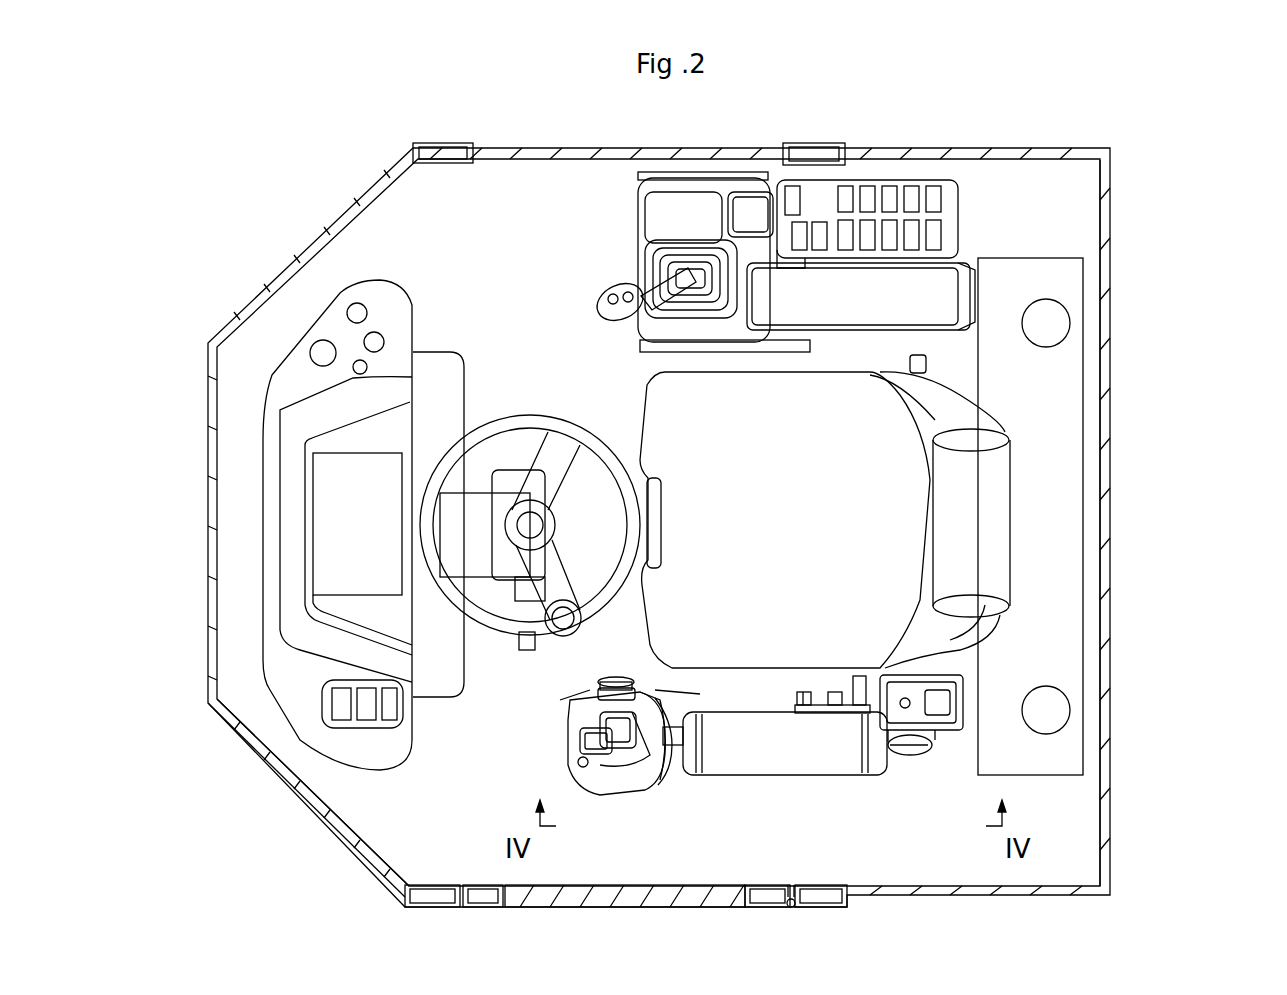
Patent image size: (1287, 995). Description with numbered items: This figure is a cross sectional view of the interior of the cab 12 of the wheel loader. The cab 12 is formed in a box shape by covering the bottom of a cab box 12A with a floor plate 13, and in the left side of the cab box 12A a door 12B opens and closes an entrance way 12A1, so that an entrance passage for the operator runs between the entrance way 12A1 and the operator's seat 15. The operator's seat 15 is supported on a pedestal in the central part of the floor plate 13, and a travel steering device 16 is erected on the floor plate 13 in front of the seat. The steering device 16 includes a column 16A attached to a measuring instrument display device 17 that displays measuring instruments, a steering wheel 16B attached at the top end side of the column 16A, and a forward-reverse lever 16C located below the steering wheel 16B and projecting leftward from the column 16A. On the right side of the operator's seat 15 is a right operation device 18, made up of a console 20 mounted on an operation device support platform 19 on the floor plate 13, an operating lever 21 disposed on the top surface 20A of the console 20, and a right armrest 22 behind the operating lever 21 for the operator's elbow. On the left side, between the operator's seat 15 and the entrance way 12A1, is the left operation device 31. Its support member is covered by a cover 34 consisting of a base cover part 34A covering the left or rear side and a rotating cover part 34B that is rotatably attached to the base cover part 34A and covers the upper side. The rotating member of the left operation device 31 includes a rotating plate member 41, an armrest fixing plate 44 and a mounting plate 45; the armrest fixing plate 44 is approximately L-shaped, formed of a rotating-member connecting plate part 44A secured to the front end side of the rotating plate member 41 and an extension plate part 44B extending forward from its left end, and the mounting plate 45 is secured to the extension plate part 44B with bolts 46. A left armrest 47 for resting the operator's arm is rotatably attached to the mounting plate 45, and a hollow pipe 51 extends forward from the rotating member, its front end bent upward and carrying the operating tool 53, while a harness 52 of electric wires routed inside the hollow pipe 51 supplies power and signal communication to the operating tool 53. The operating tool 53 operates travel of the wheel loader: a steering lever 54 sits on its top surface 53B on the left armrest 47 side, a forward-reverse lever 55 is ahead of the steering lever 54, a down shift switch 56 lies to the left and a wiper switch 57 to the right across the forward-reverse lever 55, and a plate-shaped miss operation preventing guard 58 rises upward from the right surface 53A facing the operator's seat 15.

The cab 12 is at (1130, 325).
The cab box 12A is at (1106, 556).
The door 12B is at (622, 900).
The entrance way 12A1 is at (788, 900).
The floor plate 13 is at (420, 805).
The operator's seat 15 is at (840, 477).
The travel steering device 16 is at (508, 498).
The column 16A is at (478, 520).
The steering wheel 16B is at (562, 440).
The forward-reverse lever 16C is at (532, 645).
The measuring instrument display device 17 is at (345, 525).
The right operation device 18 is at (962, 217).
The operation device support platform 19 is at (641, 176).
The console 20 is at (750, 245).
The top surface 20A is at (690, 190).
The operating lever 21 is at (618, 298).
The right armrest 22 is at (886, 300).
The left operation device 31 is at (608, 796).
The cover 34 is at (965, 730).
The base cover part 34A is at (948, 700).
The rotating cover part 34B is at (910, 757).
The rotating plate member 41 is at (877, 678).
The armrest fixing plate 44 is at (826, 695).
The rotating-member connecting plate part 44A is at (858, 675).
The extension plate part 44B is at (805, 714).
The mounting plate 45 is at (848, 714).
The bolts 46 is at (806, 694).
The left armrest 47 is at (757, 745).
The hollow pipe 51 is at (688, 742).
The harness 52 is at (930, 740).
The operating tool 53 is at (632, 760).
The right surface 53A is at (645, 700).
The top surface 53B is at (662, 700).
The steering lever 54 is at (667, 740).
The forward-reverse lever 55 is at (576, 745).
The down shift switch 56 is at (578, 760).
The wiper switch 57 is at (590, 718).
The miss operation preventing guard 58 is at (610, 690).